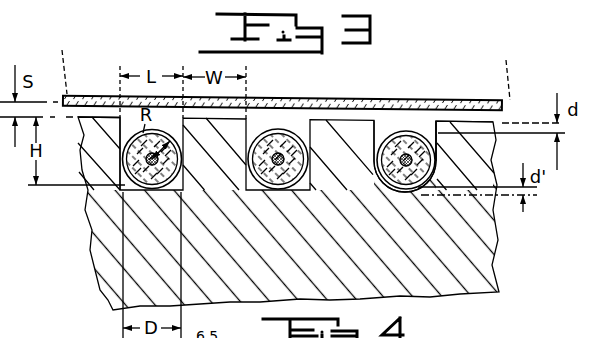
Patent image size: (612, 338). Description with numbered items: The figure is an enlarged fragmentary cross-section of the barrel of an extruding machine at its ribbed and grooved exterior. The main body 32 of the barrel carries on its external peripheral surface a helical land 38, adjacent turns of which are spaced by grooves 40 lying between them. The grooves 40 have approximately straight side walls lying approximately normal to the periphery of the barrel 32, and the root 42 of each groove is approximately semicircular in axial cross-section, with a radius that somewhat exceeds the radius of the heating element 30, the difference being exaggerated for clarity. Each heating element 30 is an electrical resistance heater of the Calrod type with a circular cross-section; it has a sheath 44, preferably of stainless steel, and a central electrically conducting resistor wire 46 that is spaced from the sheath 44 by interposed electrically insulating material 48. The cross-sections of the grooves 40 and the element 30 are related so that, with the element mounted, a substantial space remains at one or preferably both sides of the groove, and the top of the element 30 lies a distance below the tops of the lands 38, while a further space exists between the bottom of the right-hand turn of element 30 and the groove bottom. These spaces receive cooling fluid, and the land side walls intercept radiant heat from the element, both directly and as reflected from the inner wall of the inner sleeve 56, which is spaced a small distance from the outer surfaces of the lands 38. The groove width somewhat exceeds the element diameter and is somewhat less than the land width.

The heating element 30 is at (277, 125).
The main body of the barrel 32 is at (94, 252).
The helical land 38 is at (450, 139).
The grooves 40 is at (380, 124).
The root of groove 42 is at (123, 187).
The sheath 44 is at (288, 131).
The resistor wire 46 is at (401, 190).
The electrically insulating material 48 is at (379, 181).
The inner sleeve 56 is at (96, 96).